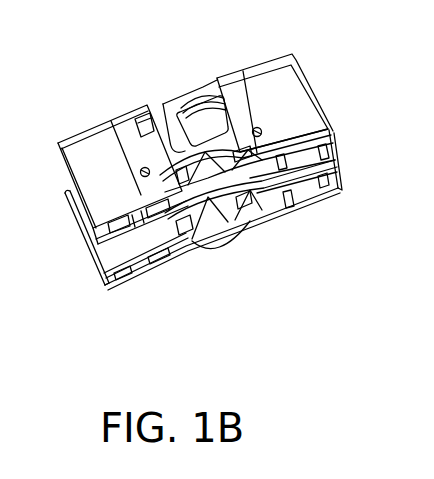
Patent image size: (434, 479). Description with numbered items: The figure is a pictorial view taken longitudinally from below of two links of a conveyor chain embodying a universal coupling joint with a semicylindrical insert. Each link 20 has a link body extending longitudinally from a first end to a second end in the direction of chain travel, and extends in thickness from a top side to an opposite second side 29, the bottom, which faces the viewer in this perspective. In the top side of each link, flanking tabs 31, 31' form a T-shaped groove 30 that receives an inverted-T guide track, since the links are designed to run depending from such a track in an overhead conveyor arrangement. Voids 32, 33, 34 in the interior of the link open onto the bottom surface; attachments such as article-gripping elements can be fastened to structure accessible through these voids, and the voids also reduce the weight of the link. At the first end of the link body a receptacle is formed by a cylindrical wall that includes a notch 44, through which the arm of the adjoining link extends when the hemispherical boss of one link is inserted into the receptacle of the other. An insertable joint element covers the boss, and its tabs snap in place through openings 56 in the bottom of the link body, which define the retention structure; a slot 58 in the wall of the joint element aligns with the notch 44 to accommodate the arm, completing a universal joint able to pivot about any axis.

The link 20 is at (60, 158).
The second side 29 is at (177, 262).
The T-shaped groove 30 is at (153, 109).
The tab 31 is at (120, 156).
The tab 31' is at (270, 93).
The void 32 is at (132, 270).
The void 33 is at (236, 228).
The void 34 is at (243, 204).
The notch 44 is at (180, 117).
The openings 56 is at (177, 160).
The slot 58 is at (193, 127).